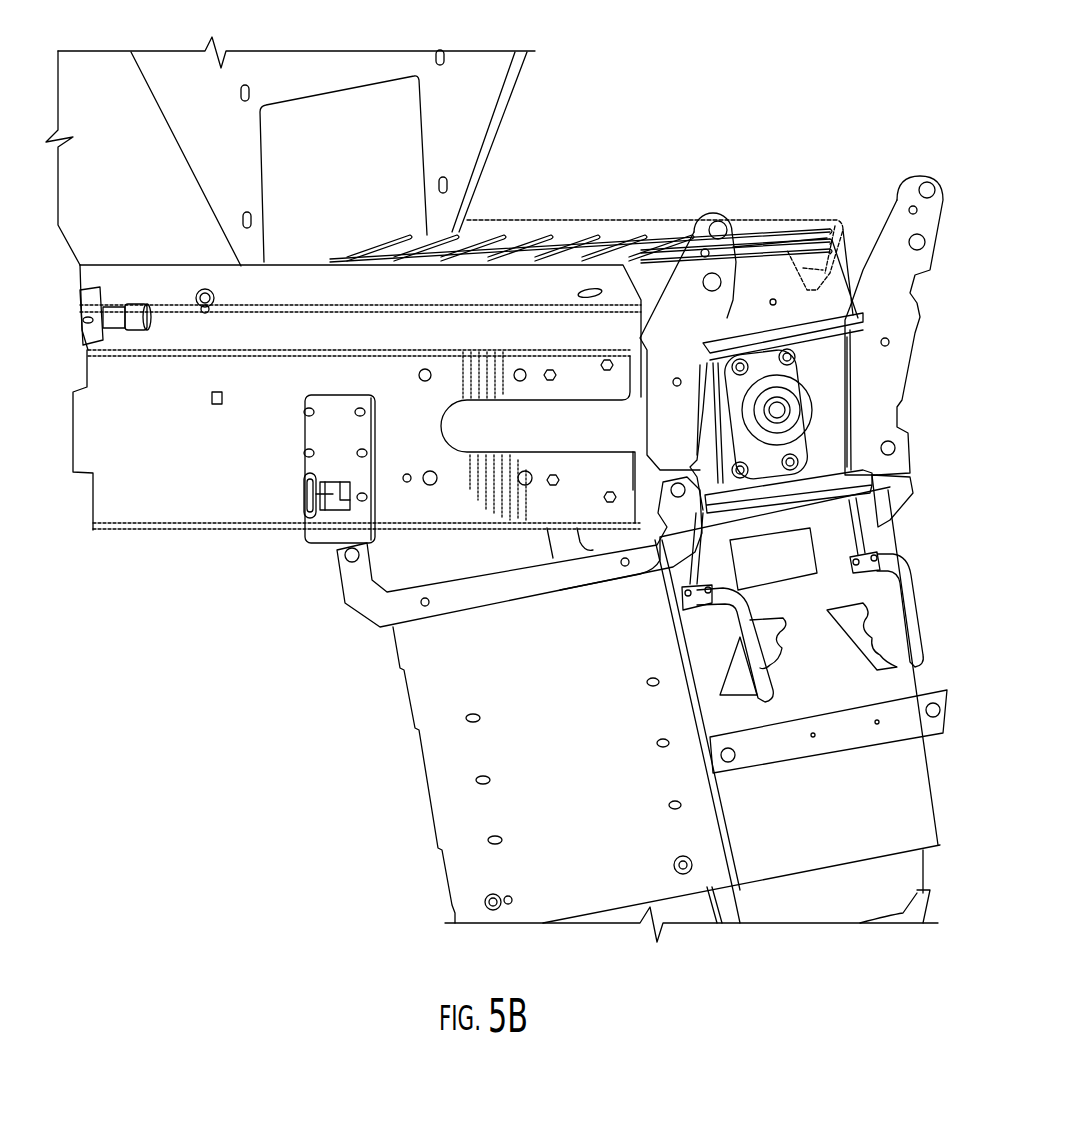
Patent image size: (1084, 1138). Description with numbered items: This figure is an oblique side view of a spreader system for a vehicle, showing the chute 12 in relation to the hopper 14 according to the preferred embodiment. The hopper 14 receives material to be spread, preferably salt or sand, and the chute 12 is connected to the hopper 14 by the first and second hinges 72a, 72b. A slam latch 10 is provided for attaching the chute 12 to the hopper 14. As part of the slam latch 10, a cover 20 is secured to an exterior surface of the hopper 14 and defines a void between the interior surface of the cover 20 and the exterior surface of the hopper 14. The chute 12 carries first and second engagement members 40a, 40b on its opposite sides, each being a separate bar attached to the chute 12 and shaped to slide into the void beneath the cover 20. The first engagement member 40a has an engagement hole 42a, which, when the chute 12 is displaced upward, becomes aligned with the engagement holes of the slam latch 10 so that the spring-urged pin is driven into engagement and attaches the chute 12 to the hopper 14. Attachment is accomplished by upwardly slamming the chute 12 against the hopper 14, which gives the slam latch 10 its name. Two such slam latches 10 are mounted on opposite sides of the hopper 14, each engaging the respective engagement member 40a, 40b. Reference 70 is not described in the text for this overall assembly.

The mounting assembly 70 is at (770, 130).
The first hinge 72a is at (675, 490).
The second hinge 72b is at (895, 450).
The cover 20 is at (318, 438).
The hopper 14 is at (183, 515).
The slam latch 10 is at (272, 545).
The engagement hole 42a is at (349, 562).
The first engagement member 40a is at (483, 595).
The second engagement member 40b is at (907, 507).
The chute 12 is at (440, 818).